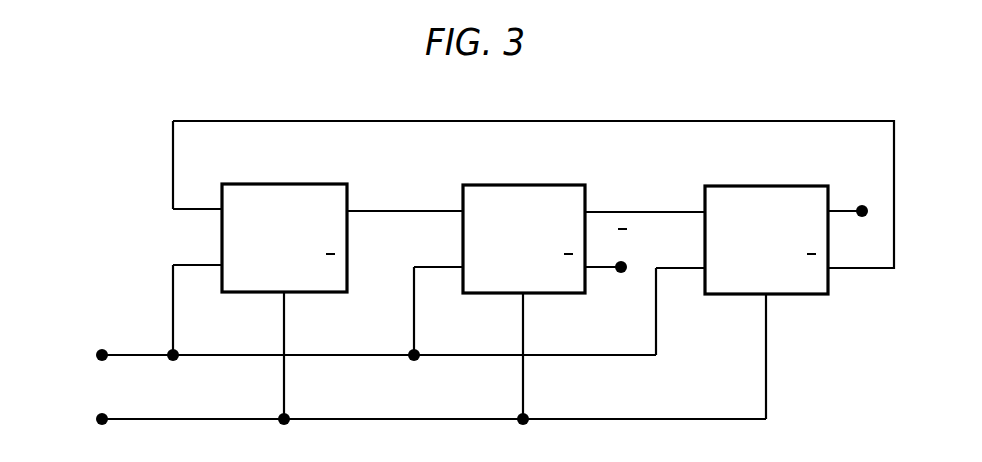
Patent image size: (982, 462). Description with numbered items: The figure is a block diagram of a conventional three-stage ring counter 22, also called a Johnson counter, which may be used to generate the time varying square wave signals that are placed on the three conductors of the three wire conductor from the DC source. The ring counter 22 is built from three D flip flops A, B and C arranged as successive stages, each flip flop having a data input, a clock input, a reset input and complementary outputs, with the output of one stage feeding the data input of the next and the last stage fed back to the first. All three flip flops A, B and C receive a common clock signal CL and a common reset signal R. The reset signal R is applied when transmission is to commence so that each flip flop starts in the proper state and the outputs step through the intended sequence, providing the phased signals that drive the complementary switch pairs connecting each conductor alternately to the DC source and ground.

The ring counter 22 is at (259, 80).
The D flip flop A is at (284, 222).
The D flip flop B is at (524, 224).
The D flip flop C is at (766, 225).